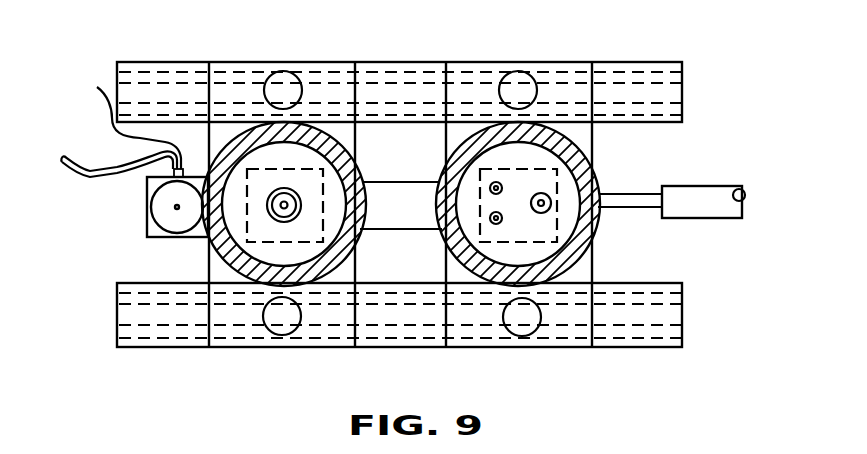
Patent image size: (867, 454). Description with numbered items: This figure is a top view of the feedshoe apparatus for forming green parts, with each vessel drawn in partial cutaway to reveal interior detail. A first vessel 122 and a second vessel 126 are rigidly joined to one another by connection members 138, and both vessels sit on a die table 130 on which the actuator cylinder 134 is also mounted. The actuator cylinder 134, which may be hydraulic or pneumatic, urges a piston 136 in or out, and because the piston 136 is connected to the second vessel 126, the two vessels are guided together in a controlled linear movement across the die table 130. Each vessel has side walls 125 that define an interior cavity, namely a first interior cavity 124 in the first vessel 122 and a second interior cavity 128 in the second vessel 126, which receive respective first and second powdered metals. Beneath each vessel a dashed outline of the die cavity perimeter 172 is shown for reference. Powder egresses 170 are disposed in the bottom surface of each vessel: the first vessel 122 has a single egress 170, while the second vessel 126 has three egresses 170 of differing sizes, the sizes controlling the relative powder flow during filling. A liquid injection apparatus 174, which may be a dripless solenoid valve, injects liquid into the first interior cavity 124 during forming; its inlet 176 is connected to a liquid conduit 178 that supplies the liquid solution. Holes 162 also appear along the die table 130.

The first vessel 122 is at (363, 185).
The first interior cavity 124 is at (328, 175).
The side walls 125 is at (580, 233).
The second vessel 126 is at (553, 197).
The second interior cavity 128 is at (568, 213).
The die table 130 is at (673, 90).
The actuator cylinder 134 is at (708, 212).
The piston 136 is at (708, 187).
The connection members 138 is at (427, 220).
The mounting hole 162 is at (285, 88).
The powder egresses 170 is at (500, 184).
The die cavity perimeter 172 is at (550, 168).
The liquid injection apparatus 174 is at (147, 223).
The inlet to the injection apparatus 176 is at (116, 122).
The liquid conduit 178 is at (85, 170).